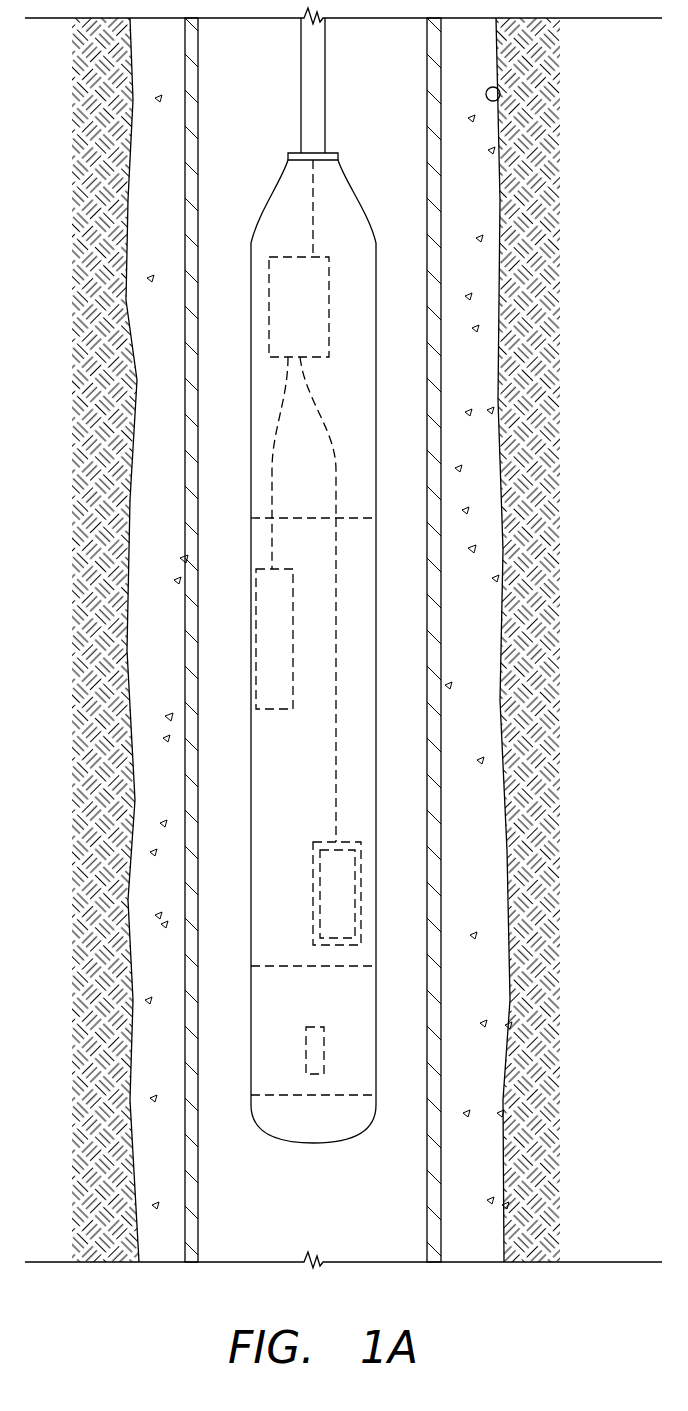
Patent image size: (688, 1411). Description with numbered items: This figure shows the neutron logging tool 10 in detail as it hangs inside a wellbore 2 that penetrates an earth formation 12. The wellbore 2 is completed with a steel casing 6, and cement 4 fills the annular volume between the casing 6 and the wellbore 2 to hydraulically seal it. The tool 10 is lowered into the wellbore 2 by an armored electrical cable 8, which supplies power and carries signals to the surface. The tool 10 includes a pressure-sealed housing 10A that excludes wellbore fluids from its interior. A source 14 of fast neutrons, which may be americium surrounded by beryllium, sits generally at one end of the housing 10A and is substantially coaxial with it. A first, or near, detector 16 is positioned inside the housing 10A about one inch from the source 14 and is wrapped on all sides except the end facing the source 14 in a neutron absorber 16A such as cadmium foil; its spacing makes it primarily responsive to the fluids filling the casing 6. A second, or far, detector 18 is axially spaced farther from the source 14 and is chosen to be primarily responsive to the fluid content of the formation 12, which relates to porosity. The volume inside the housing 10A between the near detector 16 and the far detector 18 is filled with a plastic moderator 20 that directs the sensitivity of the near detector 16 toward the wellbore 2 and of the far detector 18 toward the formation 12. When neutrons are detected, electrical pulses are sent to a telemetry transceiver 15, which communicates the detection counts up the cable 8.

The wellbore 2 is at (499, 83).
The cement 4 is at (458, 65).
The steel casing 6 is at (427, 125).
The armored electrical cable 8 is at (301, 51).
The neutron logging tool 10 is at (258, 170).
The housing 10A is at (251, 940).
The earth formation 12 is at (619, 377).
The source 14 is at (311, 1022).
The telemetry transceiver 15 is at (329, 313).
The first detector 16 is at (320, 913).
The neutron absorber 16A is at (313, 873).
The second detector 18 is at (275, 710).
The moderator 20 is at (337, 797).